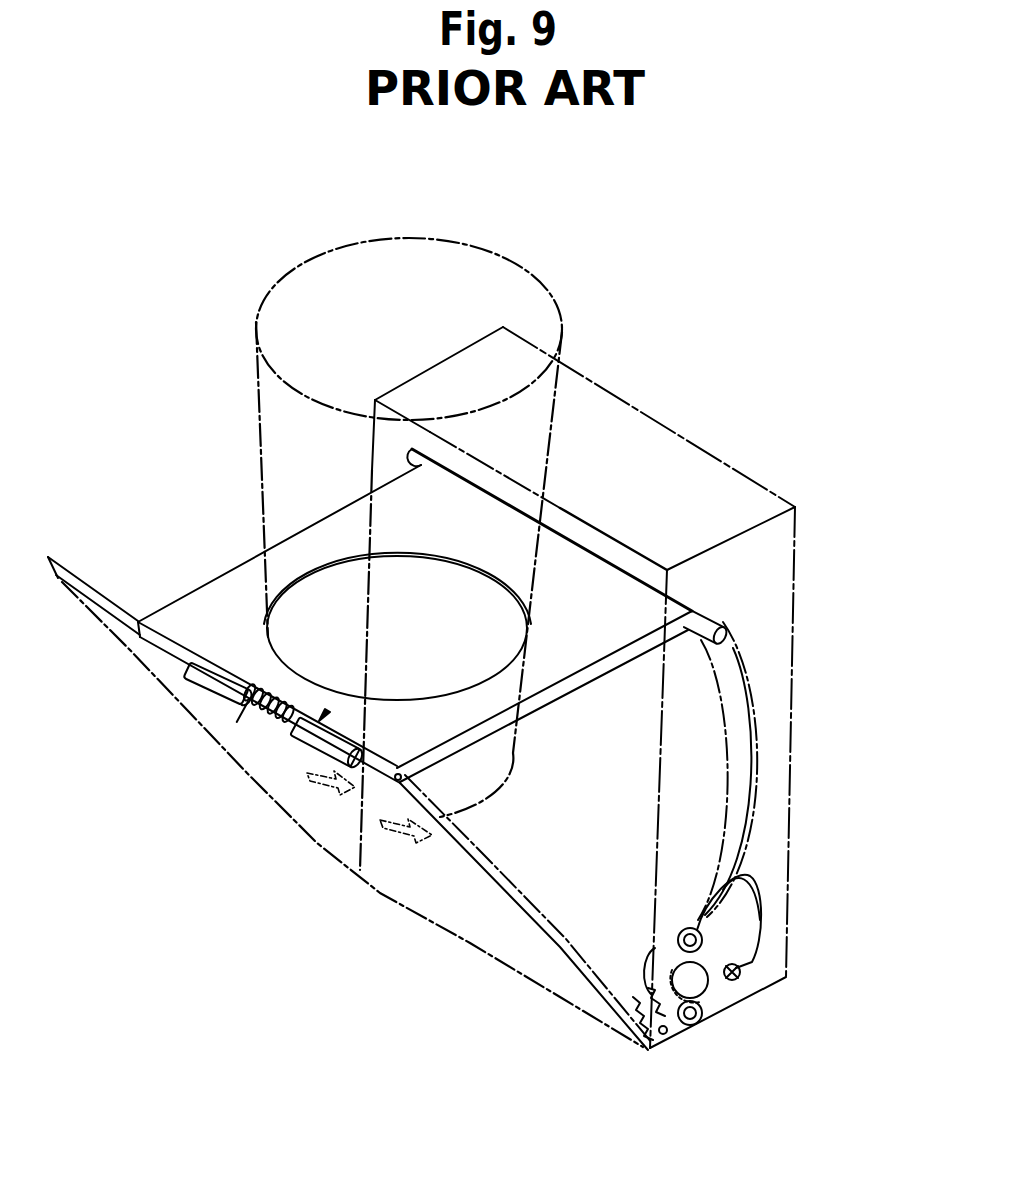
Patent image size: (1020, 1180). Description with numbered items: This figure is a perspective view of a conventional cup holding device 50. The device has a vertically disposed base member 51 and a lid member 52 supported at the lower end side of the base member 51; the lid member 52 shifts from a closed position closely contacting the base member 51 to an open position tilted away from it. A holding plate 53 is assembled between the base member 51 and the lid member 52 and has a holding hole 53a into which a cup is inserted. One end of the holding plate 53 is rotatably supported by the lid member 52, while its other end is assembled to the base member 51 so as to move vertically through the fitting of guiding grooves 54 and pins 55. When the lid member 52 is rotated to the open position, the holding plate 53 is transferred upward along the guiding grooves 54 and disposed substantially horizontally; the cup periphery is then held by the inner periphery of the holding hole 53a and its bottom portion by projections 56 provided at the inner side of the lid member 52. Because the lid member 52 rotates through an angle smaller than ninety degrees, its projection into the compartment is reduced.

The cup holding device 50 is at (687, 414).
The base member 51 is at (707, 477).
The lid member 52 is at (501, 948).
The holding plate 53 is at (215, 605).
The holding hole 53a is at (313, 575).
The guiding grooves 54 is at (753, 717).
The pins 55 is at (727, 636).
The projections 56 is at (405, 840).